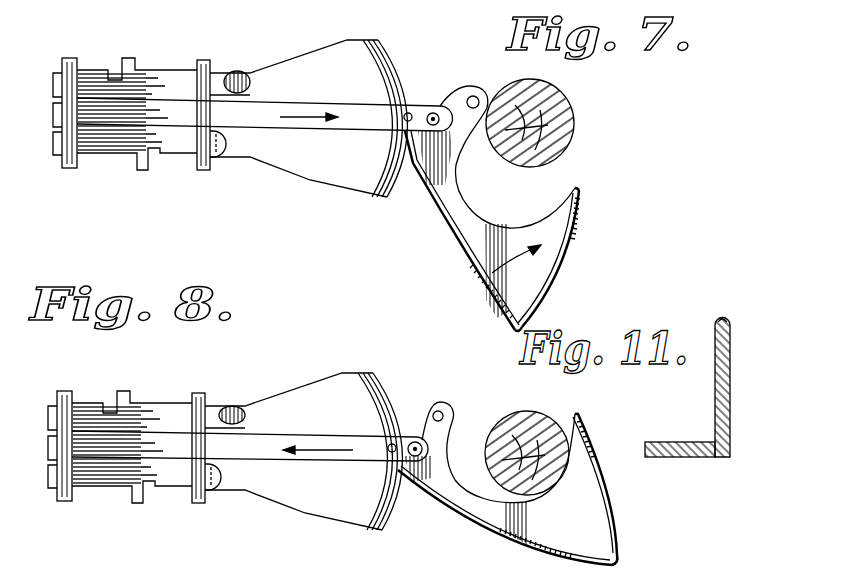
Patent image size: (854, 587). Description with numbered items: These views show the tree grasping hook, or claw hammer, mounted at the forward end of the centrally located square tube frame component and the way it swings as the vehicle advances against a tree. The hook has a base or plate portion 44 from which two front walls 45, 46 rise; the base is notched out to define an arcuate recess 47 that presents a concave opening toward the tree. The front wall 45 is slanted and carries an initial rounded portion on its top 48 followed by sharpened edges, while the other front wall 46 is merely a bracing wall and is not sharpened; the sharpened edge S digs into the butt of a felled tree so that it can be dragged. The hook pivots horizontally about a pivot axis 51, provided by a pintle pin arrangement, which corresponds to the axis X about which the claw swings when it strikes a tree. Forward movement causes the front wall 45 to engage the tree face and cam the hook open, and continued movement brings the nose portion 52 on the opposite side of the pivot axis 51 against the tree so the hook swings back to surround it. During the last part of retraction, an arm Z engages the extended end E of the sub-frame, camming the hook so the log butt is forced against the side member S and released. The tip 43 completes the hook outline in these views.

In FIG. 7, the apex of guard 43 is at (508, 333).
In FIG. 7, the base or plate portion 44 is at (494, 230).
In FIG. 8, the base or plate portion 44 is at (556, 531).
In FIG. 11, the base or plate portion 44 is at (687, 450).
In FIG. 7, the front wall 45 is at (578, 222).
In FIG. 8, the front wall 45 is at (592, 456).
In FIG. 11, the front wall 45 is at (722, 383).
In FIG. 7, the front wall 46 is at (455, 262).
In FIG. 8, the front wall 46 is at (497, 538).
In FIG. 7, the arcuate recess 47 is at (468, 207).
In FIG. 8, the arcuate recess 47 is at (460, 472).
In FIG. 11, the rounded top portion 48 is at (725, 317).
In FIG. 7, the pivot axis 51 is at (434, 113).
In FIG. 7, the nose portion 52 is at (477, 95).
In FIG. 8, the extended end of the sub-frame E is at (238, 406).
In FIG. 8, the axis X is at (415, 442).
In FIG. 8, the arm Z is at (439, 402).
In FIG. 7, the sharpened edge / side member S is at (549, 283).
In FIG. 8, the sharpened edge / side member S is at (614, 512).